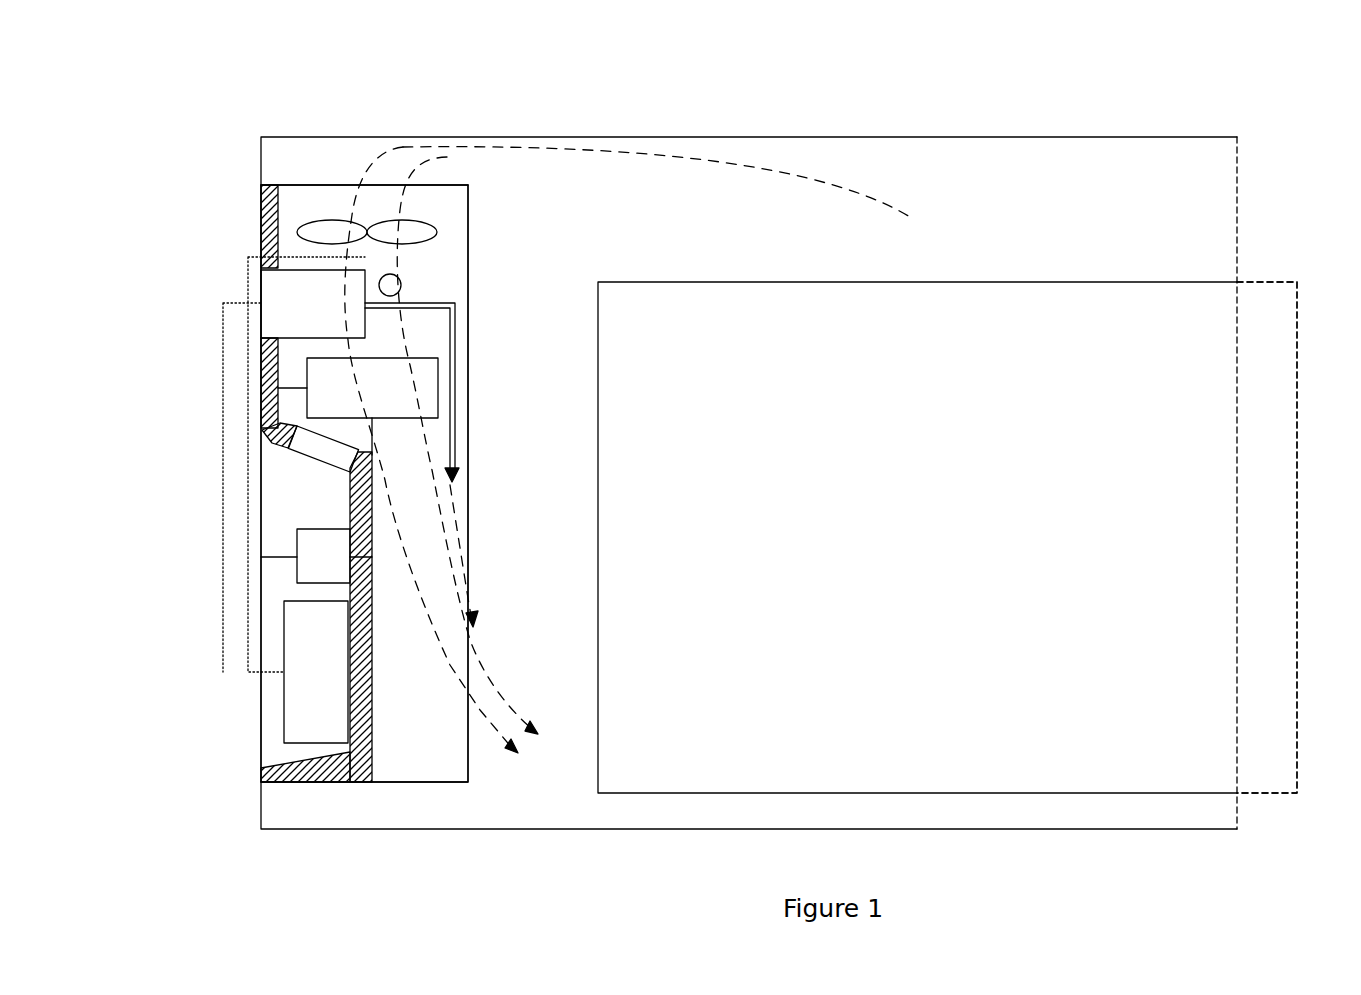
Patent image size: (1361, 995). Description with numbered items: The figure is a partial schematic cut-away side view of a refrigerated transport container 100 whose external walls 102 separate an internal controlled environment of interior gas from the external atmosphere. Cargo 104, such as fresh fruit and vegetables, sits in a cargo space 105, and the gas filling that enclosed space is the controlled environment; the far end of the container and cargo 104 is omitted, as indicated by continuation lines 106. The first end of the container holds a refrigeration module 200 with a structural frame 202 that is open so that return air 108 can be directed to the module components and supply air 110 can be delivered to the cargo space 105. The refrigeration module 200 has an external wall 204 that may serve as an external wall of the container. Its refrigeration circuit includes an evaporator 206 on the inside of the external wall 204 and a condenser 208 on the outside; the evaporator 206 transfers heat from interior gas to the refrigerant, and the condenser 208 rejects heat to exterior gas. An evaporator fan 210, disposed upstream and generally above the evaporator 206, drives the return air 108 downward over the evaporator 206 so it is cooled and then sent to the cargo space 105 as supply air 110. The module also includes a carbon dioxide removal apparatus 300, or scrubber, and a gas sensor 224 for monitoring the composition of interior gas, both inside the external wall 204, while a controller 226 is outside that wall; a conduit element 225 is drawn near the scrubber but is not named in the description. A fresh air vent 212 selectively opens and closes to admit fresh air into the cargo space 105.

The transport container 100 is at (1046, 33).
The external walls 102 is at (888, 137).
The cargo 104 is at (983, 555).
The cargo space 105 is at (1011, 247).
The continuation lines 106 is at (1297, 302).
The return air 108 is at (698, 160).
The supply air 110 is at (486, 712).
The refrigeration module 200 is at (313, 150).
The structural frame 202 is at (468, 185).
The external wall 204 is at (375, 730).
The evaporator 206 is at (358, 402).
The condenser 208 is at (297, 572).
The evaporator fan 210 is at (437, 232).
The fresh air vent 212 is at (330, 433).
The gas sensor 224 is at (400, 291).
The pipe 225 is at (456, 375).
The controller 226 is at (284, 710).
The carbon dioxide removal apparatus 300 is at (313, 304).